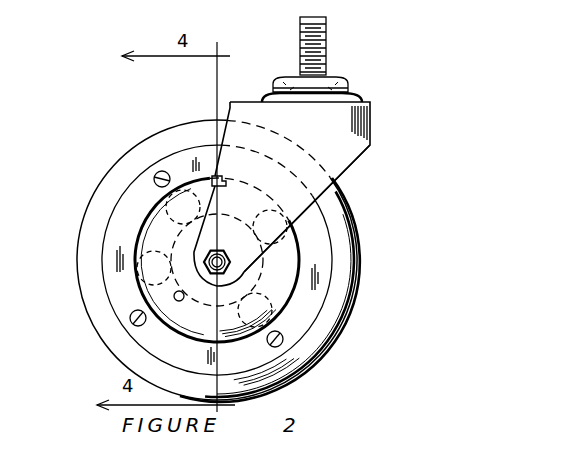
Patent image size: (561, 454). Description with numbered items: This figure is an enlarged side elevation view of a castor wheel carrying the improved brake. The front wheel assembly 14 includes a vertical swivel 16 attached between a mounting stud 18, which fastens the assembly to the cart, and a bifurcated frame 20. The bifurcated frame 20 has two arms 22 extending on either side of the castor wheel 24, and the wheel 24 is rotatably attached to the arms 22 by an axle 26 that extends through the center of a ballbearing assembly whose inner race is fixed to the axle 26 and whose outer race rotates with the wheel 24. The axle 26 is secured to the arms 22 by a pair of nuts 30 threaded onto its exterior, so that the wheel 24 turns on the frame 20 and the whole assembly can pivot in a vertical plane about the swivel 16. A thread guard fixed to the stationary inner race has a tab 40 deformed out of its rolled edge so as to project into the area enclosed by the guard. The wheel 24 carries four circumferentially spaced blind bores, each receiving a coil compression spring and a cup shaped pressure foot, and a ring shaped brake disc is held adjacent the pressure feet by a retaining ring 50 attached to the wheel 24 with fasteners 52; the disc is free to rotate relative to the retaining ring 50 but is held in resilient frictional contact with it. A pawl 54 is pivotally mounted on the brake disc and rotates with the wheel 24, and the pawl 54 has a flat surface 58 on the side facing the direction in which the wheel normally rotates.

The front wheel assembly 14 is at (342, 173).
The vertical swivel 16 is at (348, 82).
The mounting stud 18 is at (318, 48).
The bifurcated frame 20 is at (333, 132).
The arms 22 is at (265, 247).
The castor wheel 24 is at (343, 270).
The axle 26 is at (137, 240).
The nuts 30 is at (224, 281).
The tab 40 is at (214, 174).
The retaining ring 50 is at (298, 376).
The fasteners 52 is at (155, 175).
The pawl 54 is at (152, 268).
The flat surface 58 is at (204, 259).